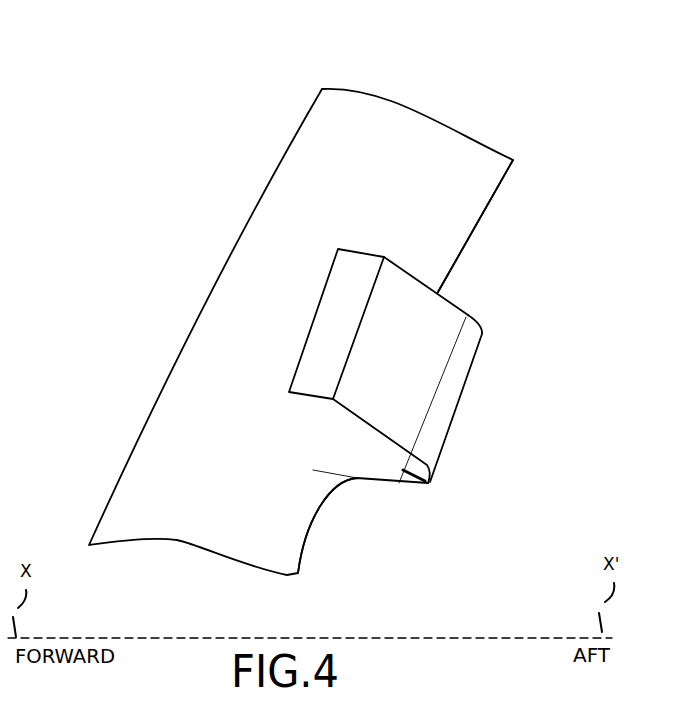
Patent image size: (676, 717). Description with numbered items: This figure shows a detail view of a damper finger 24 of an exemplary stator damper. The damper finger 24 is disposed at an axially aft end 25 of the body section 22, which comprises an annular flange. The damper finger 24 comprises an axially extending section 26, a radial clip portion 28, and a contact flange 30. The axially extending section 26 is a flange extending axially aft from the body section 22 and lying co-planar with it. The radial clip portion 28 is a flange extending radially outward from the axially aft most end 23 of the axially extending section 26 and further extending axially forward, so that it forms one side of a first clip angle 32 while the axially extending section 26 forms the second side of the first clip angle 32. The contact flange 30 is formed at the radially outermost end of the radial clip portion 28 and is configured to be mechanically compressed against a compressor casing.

The body section 22 is at (413, 153).
The axially aft most end 23 is at (423, 481).
The damper finger 24 is at (513, 330).
The axially aft end 25 is at (488, 202).
The axially extending section 26 is at (372, 482).
The radial clip portion 28 is at (420, 317).
The contact flange 30 is at (328, 325).
The first clip angle 32 is at (335, 471).